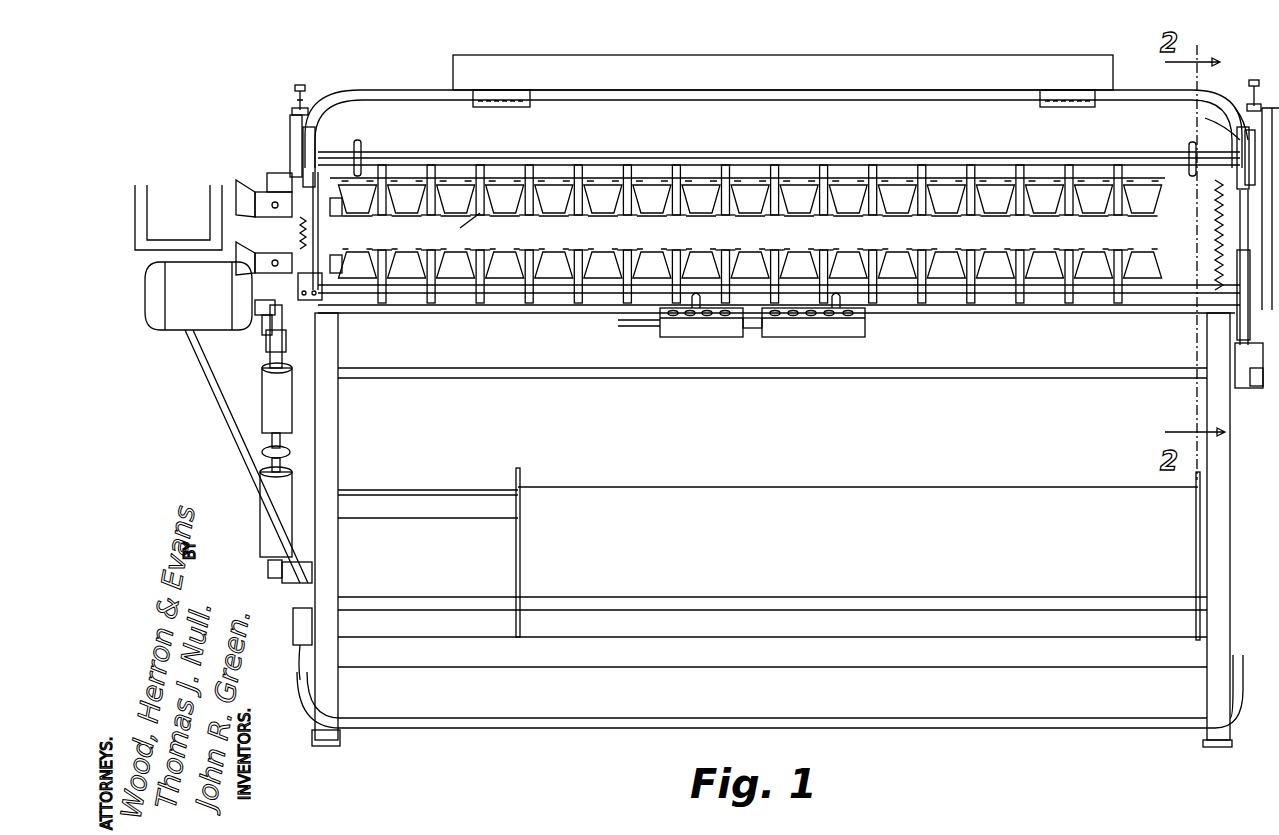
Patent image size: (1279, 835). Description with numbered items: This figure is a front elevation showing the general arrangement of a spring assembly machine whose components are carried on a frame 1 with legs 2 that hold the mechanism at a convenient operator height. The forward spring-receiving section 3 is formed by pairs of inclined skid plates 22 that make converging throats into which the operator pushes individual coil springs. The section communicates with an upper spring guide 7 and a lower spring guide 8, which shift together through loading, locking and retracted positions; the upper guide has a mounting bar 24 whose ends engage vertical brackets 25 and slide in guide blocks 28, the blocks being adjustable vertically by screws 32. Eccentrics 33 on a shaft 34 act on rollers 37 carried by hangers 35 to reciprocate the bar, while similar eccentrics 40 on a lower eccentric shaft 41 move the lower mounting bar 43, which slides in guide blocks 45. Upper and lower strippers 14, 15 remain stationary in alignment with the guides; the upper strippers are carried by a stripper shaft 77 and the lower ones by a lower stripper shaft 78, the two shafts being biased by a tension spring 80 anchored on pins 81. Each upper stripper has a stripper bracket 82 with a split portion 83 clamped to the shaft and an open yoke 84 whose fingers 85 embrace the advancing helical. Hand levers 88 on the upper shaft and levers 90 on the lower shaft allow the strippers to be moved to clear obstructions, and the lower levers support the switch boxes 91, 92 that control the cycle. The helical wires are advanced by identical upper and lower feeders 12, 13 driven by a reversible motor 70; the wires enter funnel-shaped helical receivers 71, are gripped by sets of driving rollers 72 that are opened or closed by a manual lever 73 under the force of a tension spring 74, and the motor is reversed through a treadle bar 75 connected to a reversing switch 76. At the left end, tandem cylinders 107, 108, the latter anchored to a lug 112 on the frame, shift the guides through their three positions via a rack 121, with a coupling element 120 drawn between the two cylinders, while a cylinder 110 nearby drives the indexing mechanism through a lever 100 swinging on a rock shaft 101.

The frame 1 is at (348, 88).
The legs 2 is at (340, 462).
The spring-receiving section 3 is at (880, 245).
The upper spring guide 7 is at (1170, 195).
The lower spring guide 8 is at (1178, 270).
The upper feeder 12 is at (248, 188).
The lower feeder 13 is at (240, 280).
The upper strippers 14 is at (730, 212).
The lower strippers 15 is at (640, 248).
The inclined skid plates 22 is at (557, 262).
The mounting bar 24 is at (1185, 203).
The vertical brackets 25 is at (300, 228).
The guide blocks 28 is at (296, 180).
The screws 32 is at (298, 95).
The eccentrics 33 is at (312, 165).
The shaft 34 is at (832, 162).
The hangers 35 is at (1221, 97).
The roller 37 is at (1242, 120).
The eccentrics 40 is at (1237, 322).
The eccentric shaft 41 is at (948, 310).
The lower mounting bar 43 is at (1190, 275).
The guide blocks 45 is at (1268, 250).
The reversible motor 70 is at (160, 325).
The helical receivers 71 is at (243, 190).
The driving rollers 72 is at (338, 218).
The manual lever 73 is at (340, 205).
The tension spring 74 is at (297, 280).
The treadle bar 75 is at (630, 718).
The reversing switch 76 is at (292, 630).
The stripper shaft 77 is at (1002, 164).
The lower stripper shaft 78 is at (1040, 305).
The tension spring 80 is at (1208, 218).
The pins 81 is at (1210, 305).
The stripper bracket 82 is at (477, 232).
The split portion 83 is at (630, 185).
The open yoke 84 is at (824, 216).
The fingers 85 is at (424, 215).
The hand levers 88 is at (365, 150).
The levers 90 is at (690, 297).
The switch box 91 is at (828, 325).
The switch box 92 is at (718, 325).
The lever 100 is at (1255, 370).
The rock shaft 101 is at (980, 380).
The cylinder 107 is at (262, 410).
The cylinder 108 is at (262, 512).
The cylinder 110 is at (270, 352).
The lug 112 is at (315, 570).
The coupling 120 is at (262, 452).
The rack 121 is at (268, 345).